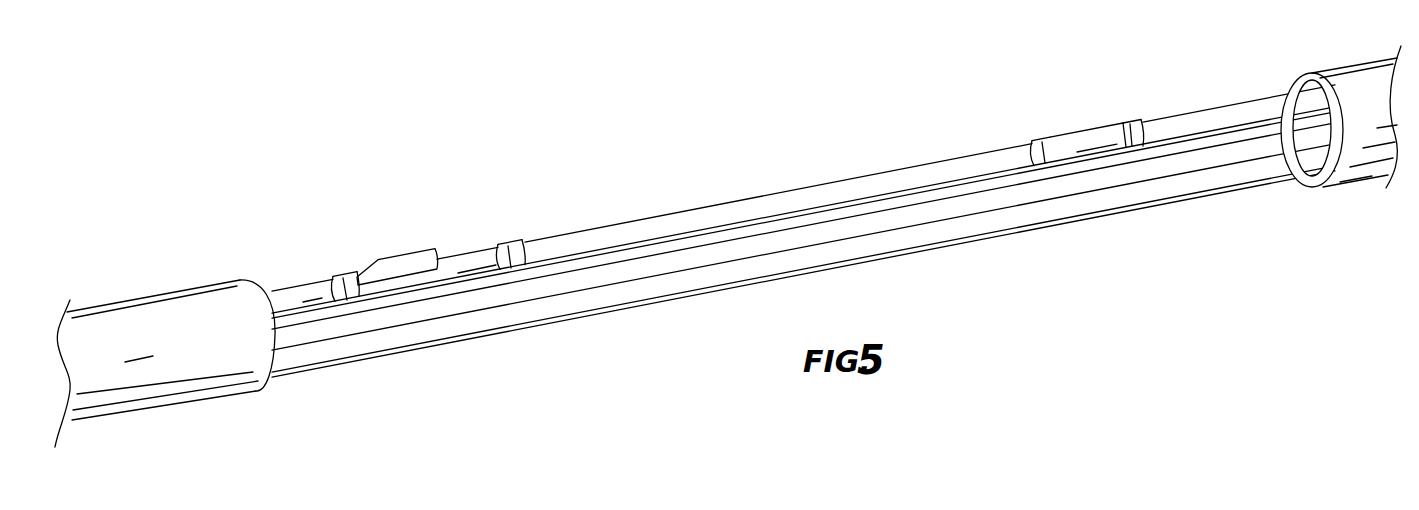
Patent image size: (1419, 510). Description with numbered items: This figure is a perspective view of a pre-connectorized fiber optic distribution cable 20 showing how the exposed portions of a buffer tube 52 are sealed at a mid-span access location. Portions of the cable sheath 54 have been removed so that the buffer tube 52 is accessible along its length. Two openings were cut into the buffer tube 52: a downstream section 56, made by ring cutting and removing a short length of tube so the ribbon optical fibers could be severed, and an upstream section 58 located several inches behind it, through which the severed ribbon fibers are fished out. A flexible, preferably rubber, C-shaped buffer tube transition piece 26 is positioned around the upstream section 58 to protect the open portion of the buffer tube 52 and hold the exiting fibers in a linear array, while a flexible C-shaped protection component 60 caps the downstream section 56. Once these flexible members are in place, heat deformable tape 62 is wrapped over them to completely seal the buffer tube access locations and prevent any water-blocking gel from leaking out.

The fiber optic distribution cable 20 is at (163, 294).
The buffer tube transition piece 26 is at (467, 252).
The buffer tube 52 is at (290, 287).
The cable sheath 54 is at (218, 365).
The downstream section 56 is at (1073, 99).
The upstream section 58 is at (390, 228).
The protection component 60 is at (1106, 121).
The heat deformable tape 62 is at (497, 262).